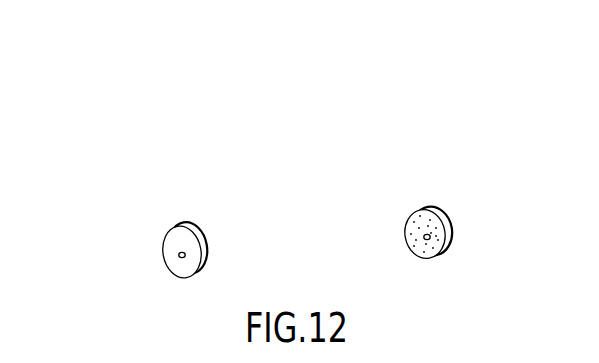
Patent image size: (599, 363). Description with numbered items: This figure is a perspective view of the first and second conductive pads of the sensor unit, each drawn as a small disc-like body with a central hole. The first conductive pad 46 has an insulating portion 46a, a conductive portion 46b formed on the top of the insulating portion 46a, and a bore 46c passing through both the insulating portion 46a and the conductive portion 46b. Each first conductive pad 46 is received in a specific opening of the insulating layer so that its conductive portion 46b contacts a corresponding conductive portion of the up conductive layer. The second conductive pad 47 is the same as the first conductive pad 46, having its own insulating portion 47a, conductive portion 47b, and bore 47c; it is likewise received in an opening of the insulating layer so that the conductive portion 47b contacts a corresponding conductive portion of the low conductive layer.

The first conductive pad 46 is at (477, 38).
The insulating portion 46a is at (436, 210).
The conductive portion 46b is at (418, 210).
The bore 46c is at (424, 237).
The second conductive pad 47 is at (223, 47).
The insulating portion 47a is at (177, 228).
The conductive portion 47b is at (181, 227).
The bore 47c is at (179, 254).